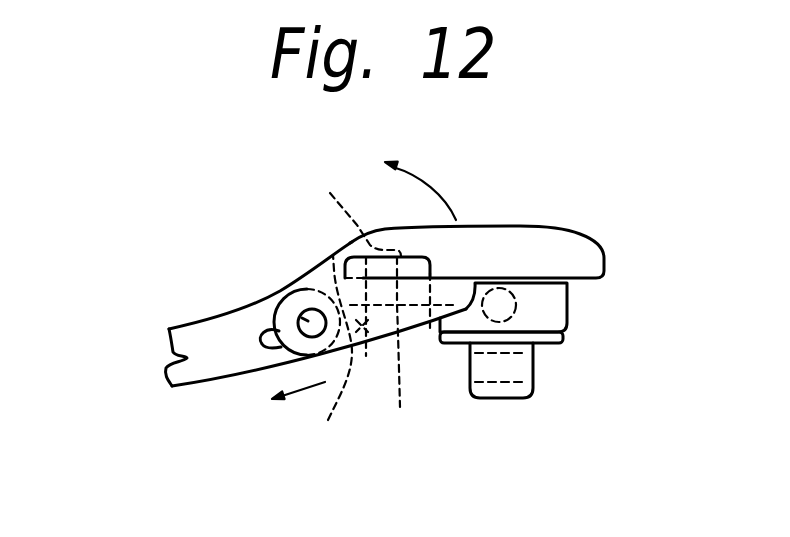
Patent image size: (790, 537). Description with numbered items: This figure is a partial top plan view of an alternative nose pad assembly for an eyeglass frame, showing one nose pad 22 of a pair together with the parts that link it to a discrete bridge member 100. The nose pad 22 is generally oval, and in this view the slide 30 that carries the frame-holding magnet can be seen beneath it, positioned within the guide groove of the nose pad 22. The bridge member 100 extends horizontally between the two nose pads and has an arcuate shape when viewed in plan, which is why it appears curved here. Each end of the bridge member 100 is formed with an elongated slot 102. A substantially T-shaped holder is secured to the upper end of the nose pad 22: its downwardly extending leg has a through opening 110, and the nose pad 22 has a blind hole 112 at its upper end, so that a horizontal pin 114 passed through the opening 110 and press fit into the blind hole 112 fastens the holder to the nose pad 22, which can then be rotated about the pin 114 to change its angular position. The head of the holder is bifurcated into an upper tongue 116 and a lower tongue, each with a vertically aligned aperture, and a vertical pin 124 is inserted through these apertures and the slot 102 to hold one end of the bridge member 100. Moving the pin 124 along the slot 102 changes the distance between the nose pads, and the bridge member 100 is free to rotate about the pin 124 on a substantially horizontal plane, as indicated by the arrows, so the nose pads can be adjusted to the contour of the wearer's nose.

The nose pad 22 is at (583, 258).
The slide 30 is at (523, 372).
The bridge member 100 is at (170, 352).
The elongated slot 102 is at (272, 347).
The through opening 110 is at (402, 352).
The blind hole 112 is at (349, 202).
The horizontal pin 114 is at (318, 360).
The upper tongue 116 is at (272, 297).
The vertical pin 124 is at (312, 323).